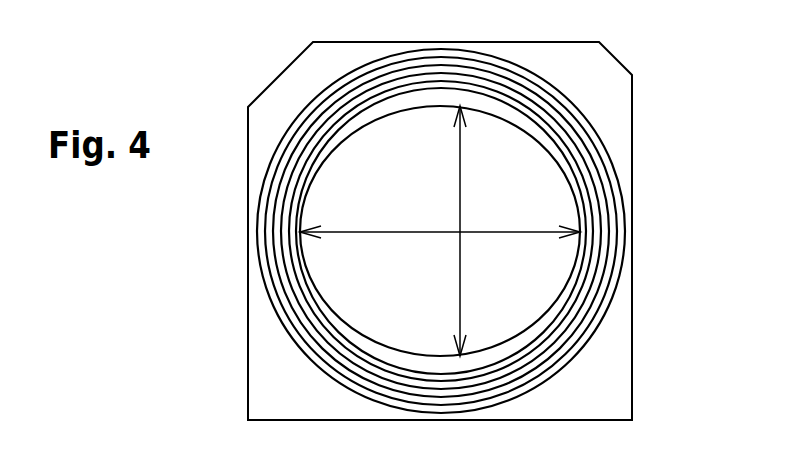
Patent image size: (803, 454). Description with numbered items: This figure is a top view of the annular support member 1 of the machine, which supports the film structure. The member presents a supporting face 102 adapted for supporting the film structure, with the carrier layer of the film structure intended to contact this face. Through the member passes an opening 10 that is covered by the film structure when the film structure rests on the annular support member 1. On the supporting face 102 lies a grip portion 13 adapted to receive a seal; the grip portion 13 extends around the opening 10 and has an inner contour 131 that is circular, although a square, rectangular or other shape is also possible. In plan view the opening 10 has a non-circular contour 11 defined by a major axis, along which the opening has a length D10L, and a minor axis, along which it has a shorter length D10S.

The annular support member 1 is at (312, 64).
The supporting face 102 is at (607, 356).
The grip portion 13 is at (600, 253).
The non-circular contour 11 is at (556, 127).
The inner contour 131 is at (580, 203).
The opening 10 is at (434, 330).
The length of the opening along the second defining axis D10S is at (459, 200).
The length of the opening along the first defining axis D10L is at (418, 233).